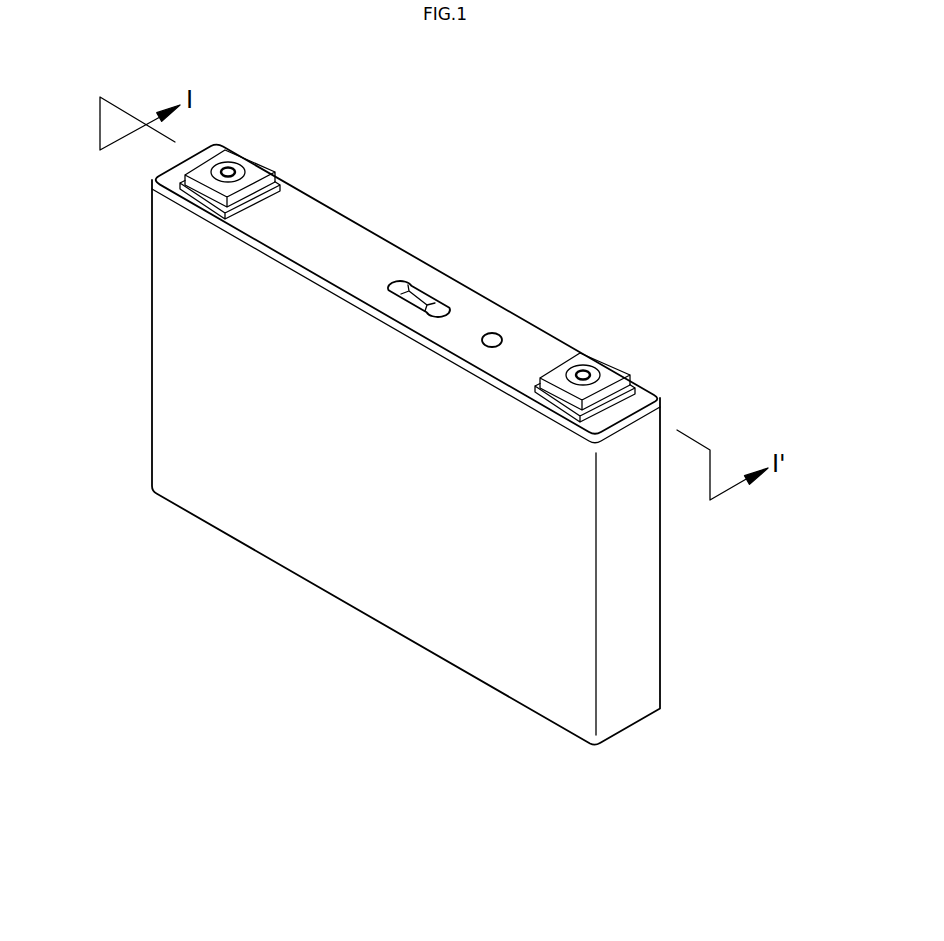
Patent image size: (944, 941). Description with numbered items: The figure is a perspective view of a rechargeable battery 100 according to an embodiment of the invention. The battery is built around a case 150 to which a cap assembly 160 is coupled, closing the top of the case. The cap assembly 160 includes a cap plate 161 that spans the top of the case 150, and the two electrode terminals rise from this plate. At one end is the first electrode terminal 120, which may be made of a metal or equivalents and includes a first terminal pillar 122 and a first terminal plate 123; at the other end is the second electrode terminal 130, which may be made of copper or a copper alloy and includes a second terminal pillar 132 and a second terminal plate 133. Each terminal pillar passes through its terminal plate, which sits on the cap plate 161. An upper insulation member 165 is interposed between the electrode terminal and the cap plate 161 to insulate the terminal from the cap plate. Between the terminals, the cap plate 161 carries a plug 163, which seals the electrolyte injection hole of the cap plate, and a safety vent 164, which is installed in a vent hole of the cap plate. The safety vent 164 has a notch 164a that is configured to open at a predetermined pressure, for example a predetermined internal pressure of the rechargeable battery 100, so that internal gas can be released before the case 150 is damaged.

The rechargeable battery 100 is at (730, 105).
The first electrode terminal 120 is at (685, 307).
The first terminal pillar 122 is at (589, 373).
The first terminal plate 123 is at (586, 358).
The second electrode terminal 130 is at (312, 97).
The second terminal pillar 132 is at (233, 172).
The second terminal plate 133 is at (233, 158).
The case 150 is at (355, 590).
The cap assembly 160 is at (360, 219).
The cap plate 161 is at (383, 258).
The plug 163 is at (501, 336).
The safety vent 164 is at (420, 284).
The notch 164a is at (432, 296).
The upper insulation member 165 is at (278, 187).